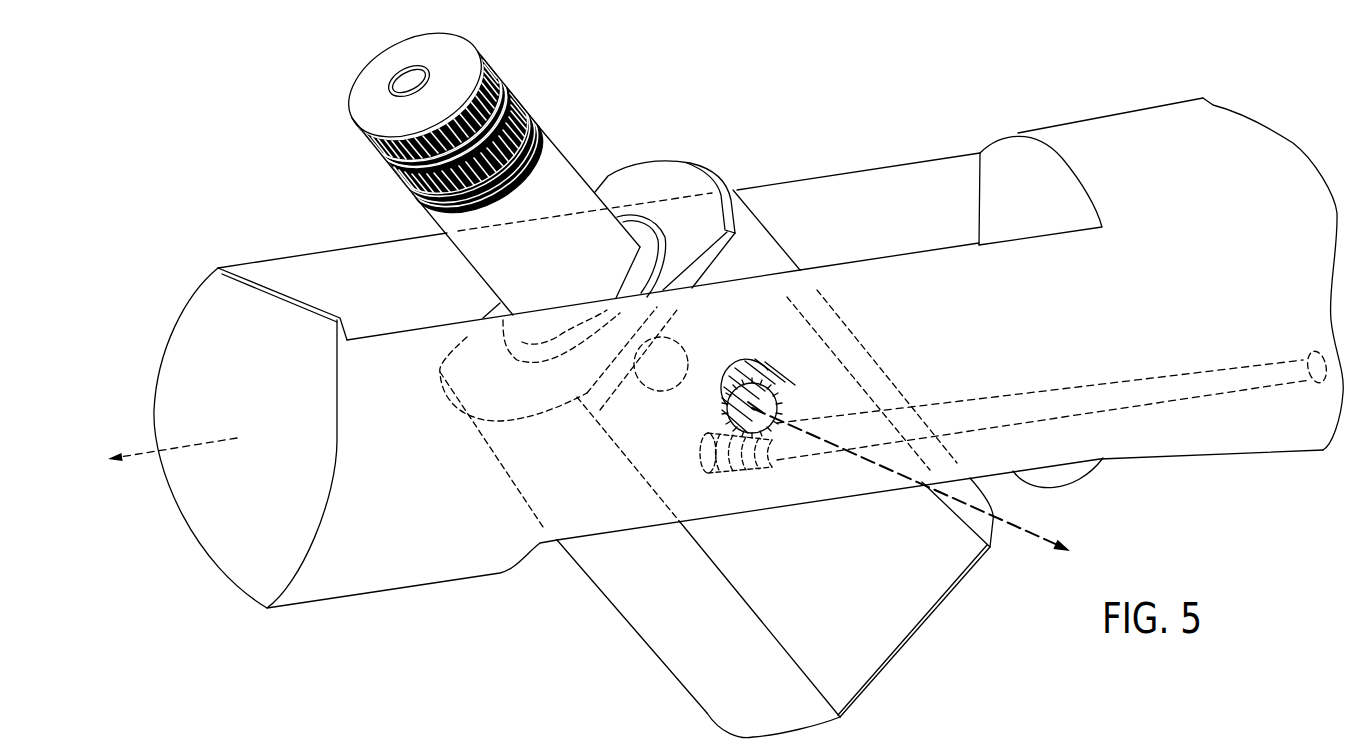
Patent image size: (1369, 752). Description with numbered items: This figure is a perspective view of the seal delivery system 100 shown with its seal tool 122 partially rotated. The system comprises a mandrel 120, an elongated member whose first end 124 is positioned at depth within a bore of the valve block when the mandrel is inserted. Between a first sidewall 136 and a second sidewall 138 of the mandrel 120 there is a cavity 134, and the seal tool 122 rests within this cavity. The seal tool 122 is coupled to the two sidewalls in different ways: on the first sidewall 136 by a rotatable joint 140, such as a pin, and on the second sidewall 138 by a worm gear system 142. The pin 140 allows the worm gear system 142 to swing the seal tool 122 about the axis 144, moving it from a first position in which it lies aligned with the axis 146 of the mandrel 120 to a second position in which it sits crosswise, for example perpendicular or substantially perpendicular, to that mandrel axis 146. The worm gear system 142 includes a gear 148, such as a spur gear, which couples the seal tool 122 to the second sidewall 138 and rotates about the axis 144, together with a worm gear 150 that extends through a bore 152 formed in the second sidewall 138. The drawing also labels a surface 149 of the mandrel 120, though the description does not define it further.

The seal delivery system 100 is at (527, 652).
The mandrel 120 is at (1127, 140).
The seal tool 122 is at (731, 150).
The first end 124 is at (232, 565).
The cavity 134 is at (847, 212).
The first sidewall 136 is at (330, 248).
The second sidewall 138 is at (920, 266).
The rotatable joint 140 is at (650, 397).
The worm gear system 142 is at (830, 475).
The axis 144 is at (1030, 536).
The axis of the mandrel 146 is at (143, 452).
The gear 148 is at (747, 362).
The bottom surface 149 is at (440, 562).
The worm gear 150 is at (1217, 393).
The bore 152 is at (1162, 390).